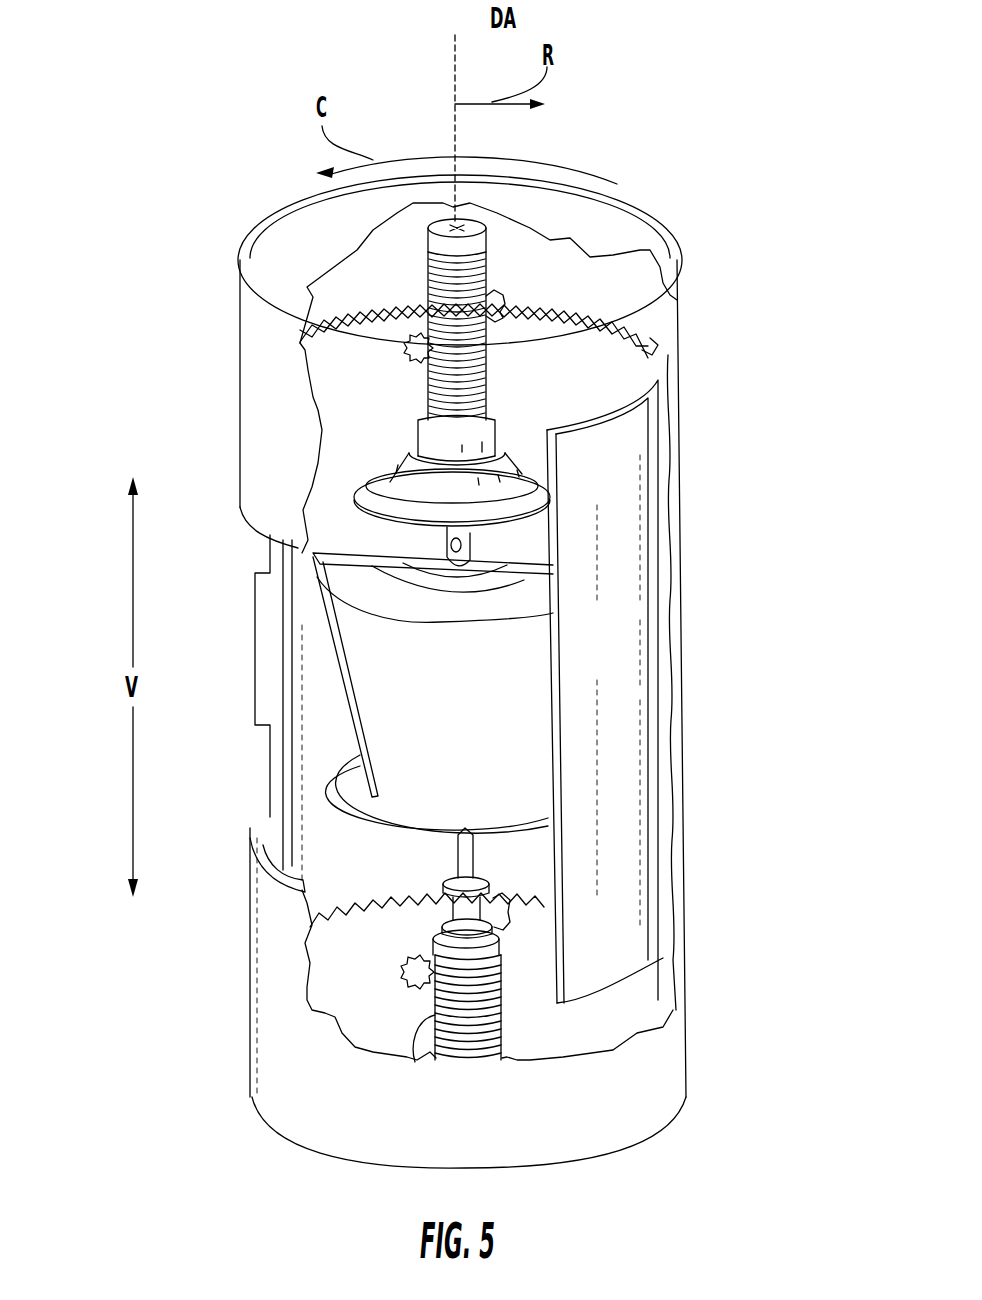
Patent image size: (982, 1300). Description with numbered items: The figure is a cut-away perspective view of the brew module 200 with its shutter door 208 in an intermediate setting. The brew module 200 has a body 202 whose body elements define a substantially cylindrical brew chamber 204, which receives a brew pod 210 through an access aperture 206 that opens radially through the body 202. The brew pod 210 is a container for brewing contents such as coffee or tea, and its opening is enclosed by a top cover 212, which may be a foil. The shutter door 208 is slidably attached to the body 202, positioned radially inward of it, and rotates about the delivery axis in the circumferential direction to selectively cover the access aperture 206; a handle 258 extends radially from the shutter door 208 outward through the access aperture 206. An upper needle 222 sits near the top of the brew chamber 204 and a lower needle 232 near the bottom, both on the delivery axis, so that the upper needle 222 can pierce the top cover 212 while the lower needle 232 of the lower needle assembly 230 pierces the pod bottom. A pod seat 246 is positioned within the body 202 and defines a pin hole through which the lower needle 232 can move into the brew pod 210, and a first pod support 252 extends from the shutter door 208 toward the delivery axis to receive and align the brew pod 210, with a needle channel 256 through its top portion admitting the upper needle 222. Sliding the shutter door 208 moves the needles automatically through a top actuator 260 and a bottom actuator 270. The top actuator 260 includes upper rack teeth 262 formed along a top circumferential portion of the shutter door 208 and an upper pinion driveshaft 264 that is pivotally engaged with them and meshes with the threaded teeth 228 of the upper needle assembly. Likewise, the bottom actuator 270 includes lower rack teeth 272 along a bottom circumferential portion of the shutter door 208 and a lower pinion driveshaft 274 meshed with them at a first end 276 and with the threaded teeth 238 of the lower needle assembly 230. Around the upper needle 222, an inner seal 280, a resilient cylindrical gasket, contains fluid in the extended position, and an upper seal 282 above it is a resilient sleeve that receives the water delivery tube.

The brew module 200 is at (142, 190).
The body 202 is at (240, 322).
The brew chamber 204 is at (373, 998).
The access aperture 206 is at (270, 889).
The shutter door 208 is at (630, 767).
The brew pod 210 is at (515, 690).
The top cover 212 is at (347, 587).
The upper needle 222 is at (470, 546).
The threaded teeth 228 is at (500, 298).
The lower needle assembly 230 is at (402, 992).
The lower needle 232 is at (457, 861).
The threaded teeth 238 is at (425, 1018).
The pod seat 246 is at (337, 813).
The first pod support 252 is at (320, 742).
The needle channel 256 is at (435, 556).
The handle 258 is at (255, 650).
The top actuator 260 is at (652, 349).
The upper rack teeth 262 is at (353, 310).
The upper pinion driveshaft 264 is at (420, 323).
The bottom actuator 270 is at (565, 1055).
The lower rack teeth 272 is at (328, 934).
The lower pinion driveshaft 274 is at (404, 951).
The first end 276 is at (533, 922).
The inner seal 280 is at (382, 484).
The upper seal 282 is at (478, 240).